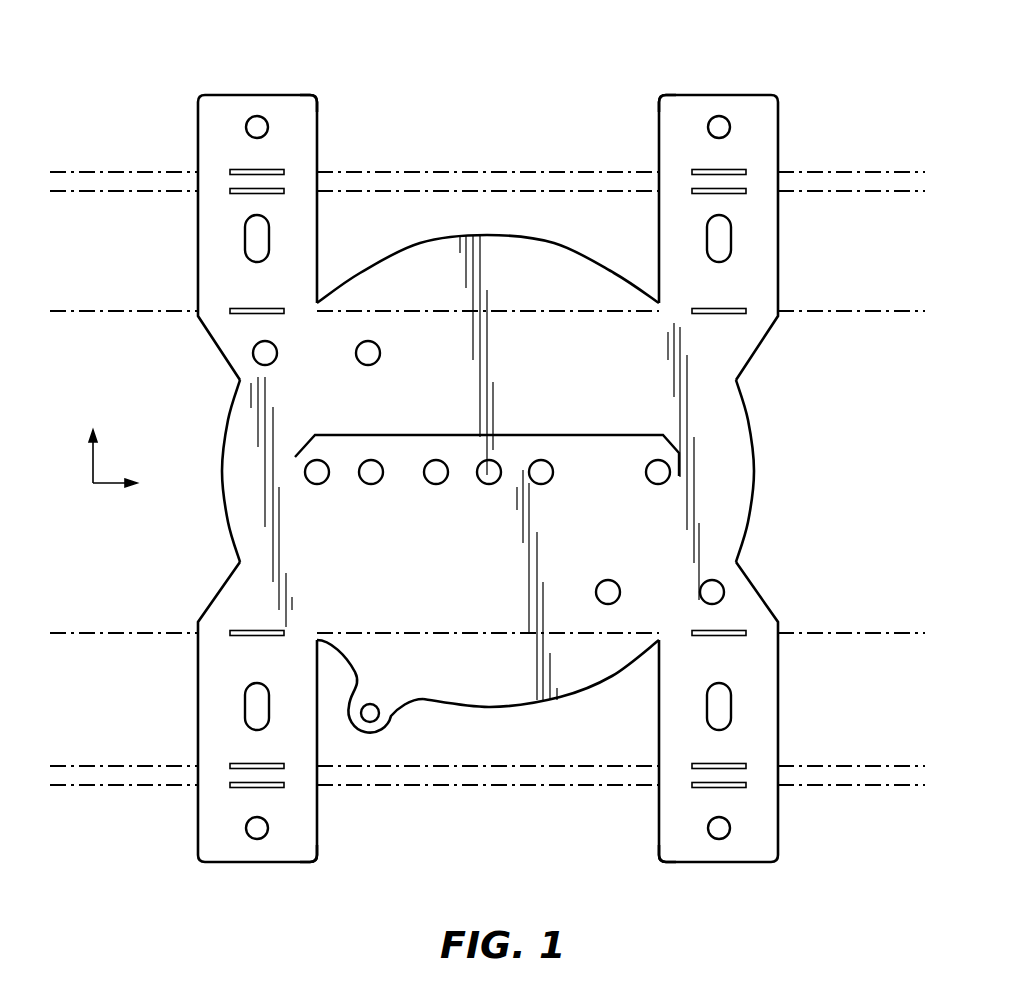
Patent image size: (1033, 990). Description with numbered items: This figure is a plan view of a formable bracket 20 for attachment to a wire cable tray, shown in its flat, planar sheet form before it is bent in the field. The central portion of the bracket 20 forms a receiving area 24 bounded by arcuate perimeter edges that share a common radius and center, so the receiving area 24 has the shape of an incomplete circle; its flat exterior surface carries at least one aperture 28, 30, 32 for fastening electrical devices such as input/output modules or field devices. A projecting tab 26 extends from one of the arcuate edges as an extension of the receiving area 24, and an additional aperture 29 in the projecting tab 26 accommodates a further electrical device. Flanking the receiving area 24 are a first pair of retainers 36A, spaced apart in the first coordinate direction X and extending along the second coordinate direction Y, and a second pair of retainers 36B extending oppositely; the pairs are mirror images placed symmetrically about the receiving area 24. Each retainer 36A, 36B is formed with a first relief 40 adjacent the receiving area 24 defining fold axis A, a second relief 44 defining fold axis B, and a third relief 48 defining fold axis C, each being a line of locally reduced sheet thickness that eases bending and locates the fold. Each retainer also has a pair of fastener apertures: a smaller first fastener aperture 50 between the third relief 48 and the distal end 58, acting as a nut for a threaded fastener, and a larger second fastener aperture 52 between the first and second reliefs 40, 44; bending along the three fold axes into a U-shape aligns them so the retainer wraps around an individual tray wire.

The bracket 20 is at (146, 44).
The receiving area 24 is at (500, 255).
The projecting tab 26 is at (377, 732).
The aperture 28 is at (360, 363).
The additional aperture 29 is at (378, 705).
The aperture 30 is at (530, 434).
The aperture 32 is at (618, 583).
The first pair of retainers 36A is at (197, 126).
The second pair of retainers 36B is at (198, 840).
The first relief 40 is at (242, 313).
The second relief 44 is at (272, 193).
The third relief 48 is at (268, 171).
The first fastener aperture 50 is at (254, 117).
The second fastener aperture 52 is at (244, 236).
The distal end 58 is at (272, 95).